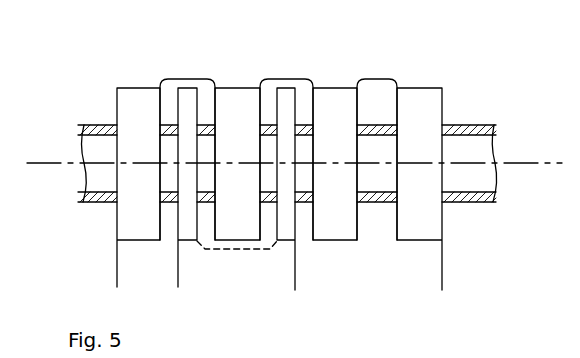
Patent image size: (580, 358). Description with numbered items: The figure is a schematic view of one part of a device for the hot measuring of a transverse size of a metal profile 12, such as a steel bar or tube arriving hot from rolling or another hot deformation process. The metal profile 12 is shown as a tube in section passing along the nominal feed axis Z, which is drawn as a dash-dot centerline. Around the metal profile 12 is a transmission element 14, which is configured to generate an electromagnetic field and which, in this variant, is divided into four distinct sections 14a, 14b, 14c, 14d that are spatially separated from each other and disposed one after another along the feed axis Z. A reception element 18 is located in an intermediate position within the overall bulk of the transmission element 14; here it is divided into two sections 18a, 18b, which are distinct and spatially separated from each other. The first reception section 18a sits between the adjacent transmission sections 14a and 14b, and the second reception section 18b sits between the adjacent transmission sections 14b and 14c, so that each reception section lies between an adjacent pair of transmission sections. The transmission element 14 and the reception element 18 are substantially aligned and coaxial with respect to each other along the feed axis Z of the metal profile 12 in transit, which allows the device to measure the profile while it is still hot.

The metal profile 12 is at (471, 199).
The transmission element 14 is at (282, 148).
The first section of the transmission element 14a is at (134, 102).
The second section of the transmission element 14b is at (240, 102).
The third section of the transmission element 14c is at (342, 102).
The fourth section of the transmission element 14d is at (421, 102).
The reception element 18 is at (258, 209).
The first section of the reception element 18a is at (186, 233).
The second section of the reception element 18b is at (286, 232).
The nominal feed axis Z is at (533, 163).